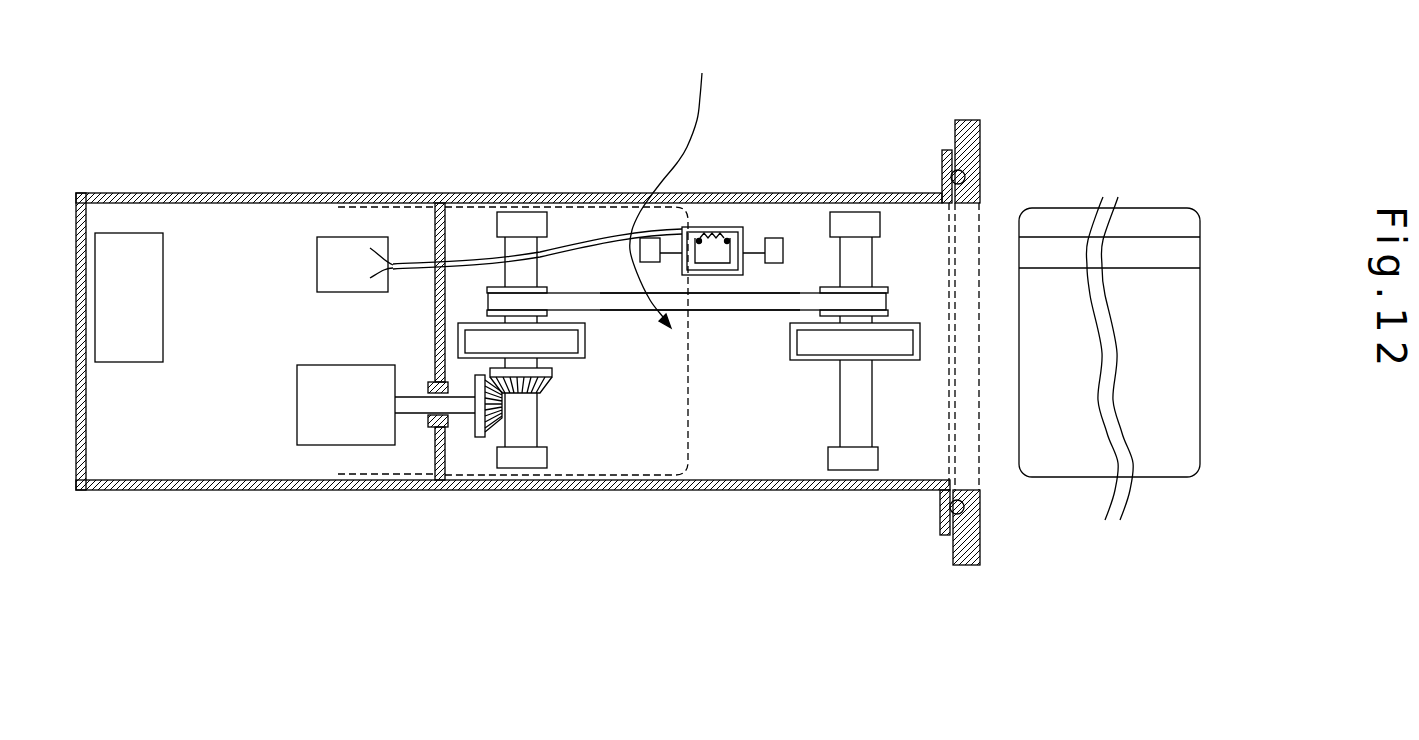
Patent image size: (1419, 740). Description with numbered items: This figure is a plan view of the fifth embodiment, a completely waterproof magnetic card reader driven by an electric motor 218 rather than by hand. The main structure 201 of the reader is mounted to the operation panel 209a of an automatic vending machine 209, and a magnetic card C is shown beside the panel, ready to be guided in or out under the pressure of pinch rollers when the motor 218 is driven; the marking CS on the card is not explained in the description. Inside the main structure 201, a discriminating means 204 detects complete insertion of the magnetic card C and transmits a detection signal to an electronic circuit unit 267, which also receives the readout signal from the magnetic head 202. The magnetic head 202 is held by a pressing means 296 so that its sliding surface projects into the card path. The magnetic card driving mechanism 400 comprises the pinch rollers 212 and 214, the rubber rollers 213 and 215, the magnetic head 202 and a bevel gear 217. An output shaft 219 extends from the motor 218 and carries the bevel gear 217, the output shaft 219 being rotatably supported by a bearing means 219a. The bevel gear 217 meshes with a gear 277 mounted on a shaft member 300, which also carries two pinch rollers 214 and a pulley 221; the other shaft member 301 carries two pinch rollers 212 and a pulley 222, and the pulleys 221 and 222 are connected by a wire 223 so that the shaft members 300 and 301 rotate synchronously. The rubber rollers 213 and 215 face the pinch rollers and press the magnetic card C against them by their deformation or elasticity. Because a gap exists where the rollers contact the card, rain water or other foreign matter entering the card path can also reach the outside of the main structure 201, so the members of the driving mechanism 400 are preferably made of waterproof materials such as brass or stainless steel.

The main structure 201 is at (260, 192).
The discriminating means 204 is at (128, 247).
The electronic circuit unit 267 is at (345, 248).
The electric motor 218 is at (322, 423).
The output shaft 219 is at (415, 397).
The bearing means 219a is at (433, 427).
The shaft member 300 is at (517, 243).
The pulley 221 is at (527, 300).
The pulley 222 is at (850, 303).
The wire 223 is at (725, 303).
The pinch roller 214 is at (583, 355).
The rubber roller 215 is at (557, 338).
The bevel gear 217 is at (500, 408).
The gear 277 is at (543, 388).
The magnetic card driving mechanism 400 is at (675, 178).
The magnetic head 202 is at (728, 227).
The pressing means 296 is at (760, 243).
The shaft member 301 is at (855, 260).
The rubber roller 213 is at (895, 357).
The pinch roller 212 is at (818, 342).
The automatic vending machine 209 is at (1010, 137).
The operation panel 209a is at (978, 196).
The magnetic card C is at (1170, 360).
The container seam CS is at (1128, 247).